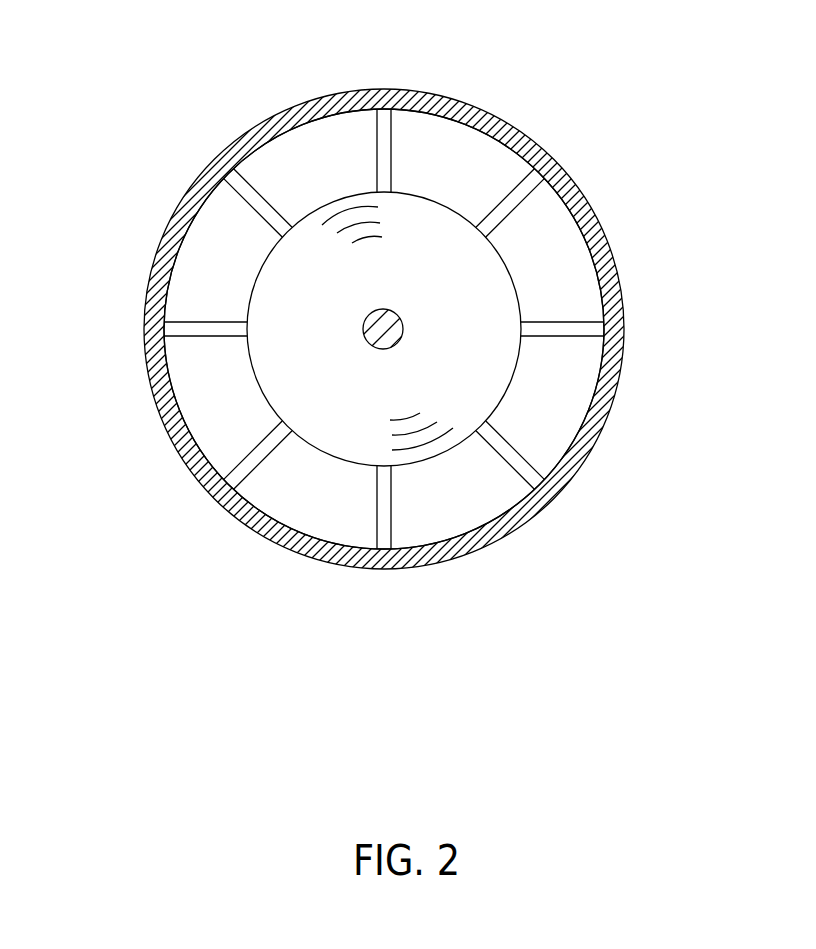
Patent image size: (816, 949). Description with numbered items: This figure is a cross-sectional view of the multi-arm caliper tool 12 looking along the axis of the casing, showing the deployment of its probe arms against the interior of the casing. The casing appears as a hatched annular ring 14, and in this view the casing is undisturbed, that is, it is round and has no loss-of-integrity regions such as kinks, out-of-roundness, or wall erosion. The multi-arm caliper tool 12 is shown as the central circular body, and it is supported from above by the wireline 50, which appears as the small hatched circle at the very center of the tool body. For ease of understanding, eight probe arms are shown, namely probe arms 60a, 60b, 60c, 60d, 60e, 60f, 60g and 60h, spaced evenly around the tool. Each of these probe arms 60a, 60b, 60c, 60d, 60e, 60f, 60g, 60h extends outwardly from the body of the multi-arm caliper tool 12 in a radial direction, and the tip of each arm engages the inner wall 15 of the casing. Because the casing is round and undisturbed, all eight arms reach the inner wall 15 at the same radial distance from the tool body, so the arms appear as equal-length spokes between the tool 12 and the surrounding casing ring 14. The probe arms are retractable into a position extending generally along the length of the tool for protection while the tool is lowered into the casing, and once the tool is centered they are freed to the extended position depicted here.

The multi-arm caliper tool 12 is at (516, 284).
The outer tubular wall 14 is at (498, 146).
The inner wall 15 is at (502, 146).
The wireline 50 is at (402, 337).
The probe arm 60a is at (390, 127).
The probe arm 60b is at (533, 190).
The probe arm 60c is at (612, 325).
The probe arm 60d is at (537, 478).
The probe arm 60e is at (380, 540).
The probe arm 60f is at (237, 470).
The probe arm 60g is at (172, 320).
The probe arm 60h is at (230, 198).